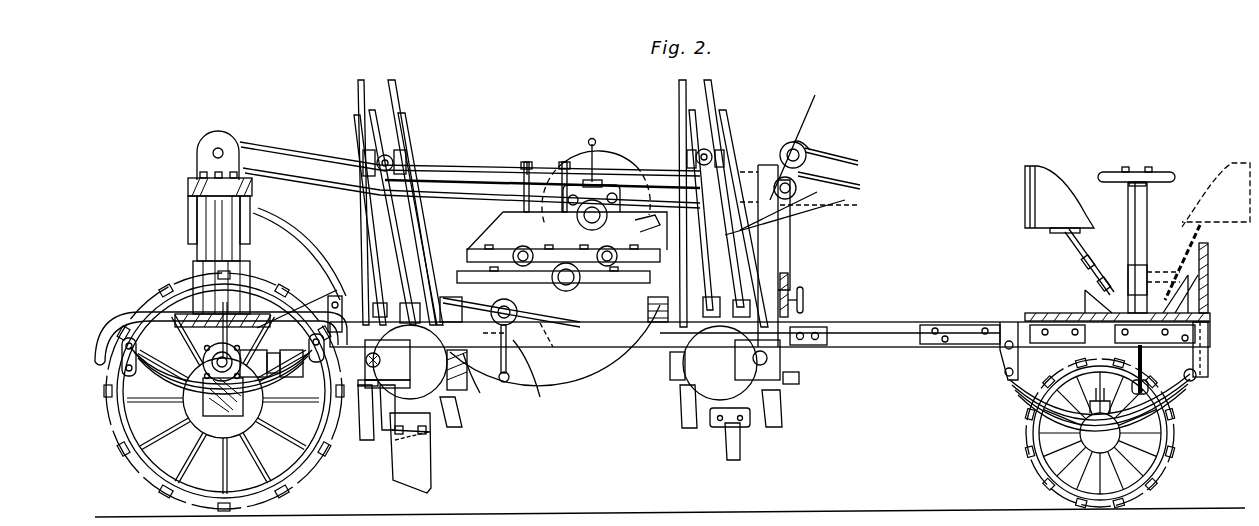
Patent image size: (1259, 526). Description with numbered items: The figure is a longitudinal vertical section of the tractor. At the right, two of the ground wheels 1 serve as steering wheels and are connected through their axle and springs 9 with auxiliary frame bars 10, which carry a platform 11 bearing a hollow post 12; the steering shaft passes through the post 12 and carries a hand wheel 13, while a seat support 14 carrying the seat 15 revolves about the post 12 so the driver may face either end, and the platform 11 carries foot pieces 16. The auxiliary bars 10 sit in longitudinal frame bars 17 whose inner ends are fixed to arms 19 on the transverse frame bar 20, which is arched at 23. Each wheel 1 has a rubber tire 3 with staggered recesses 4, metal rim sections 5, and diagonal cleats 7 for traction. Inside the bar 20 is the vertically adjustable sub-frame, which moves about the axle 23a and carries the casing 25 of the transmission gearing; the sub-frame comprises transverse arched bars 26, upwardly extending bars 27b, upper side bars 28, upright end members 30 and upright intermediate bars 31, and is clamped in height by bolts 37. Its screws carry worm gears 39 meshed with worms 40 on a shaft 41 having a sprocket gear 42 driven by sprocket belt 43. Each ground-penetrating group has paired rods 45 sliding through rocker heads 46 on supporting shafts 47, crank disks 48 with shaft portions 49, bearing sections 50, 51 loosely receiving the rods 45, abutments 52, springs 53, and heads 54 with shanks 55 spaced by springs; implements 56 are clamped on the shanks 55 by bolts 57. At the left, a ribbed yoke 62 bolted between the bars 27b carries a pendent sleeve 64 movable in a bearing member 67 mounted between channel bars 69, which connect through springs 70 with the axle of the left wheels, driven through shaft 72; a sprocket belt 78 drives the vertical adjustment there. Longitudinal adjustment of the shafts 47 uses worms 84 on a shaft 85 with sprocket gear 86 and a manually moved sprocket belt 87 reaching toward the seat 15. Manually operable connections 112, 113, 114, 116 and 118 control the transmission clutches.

The ground wheels 1 is at (150, 445).
The rubber tire 3 is at (305, 482).
The staggered recesses 4 is at (1032, 430).
The rim sections 5 is at (240, 488).
The diagonal metallic cleats 7 is at (1172, 455).
The springs 9 is at (1025, 392).
The auxiliary frame bars 10 is at (958, 330).
The platform 11 is at (1052, 318).
The hollow post 12 is at (1148, 225).
The hand wheel 13 is at (1108, 172).
The seat support 14 is at (1082, 255).
The seat 15 is at (1045, 180).
The foot pieces 16 is at (1125, 290).
The longitudinal frame bars 17 is at (890, 330).
The longitudinally disposed arms 19 is at (805, 347).
The transverse frame bar 20 is at (803, 300).
The arch 23 is at (790, 285).
The axle 23a is at (212, 375).
The casing of the transmission gearing 25 is at (558, 185).
The transverse arched bars 26 is at (475, 345).
The rearwardly and upwardly extending longitudinal bars 27b is at (305, 250).
The upper side bars 28 is at (510, 175).
The upright end members 30 is at (790, 225).
The upright intermediate bars 31 is at (447, 224).
The bolt 37 is at (304, 307).
The worm gear 39 is at (765, 172).
The worms 40 is at (801, 214).
The transverse shaft 41 is at (829, 171).
The sprocket gear 42 is at (792, 139).
The sprocket belt 43 is at (630, 180).
The rods 45 is at (400, 112).
The rocker heads 46 is at (375, 160).
The transverse supporting shafts 47 is at (405, 125).
The crank disks 48 is at (722, 430).
The shaft portions 49 is at (367, 415).
The bearing section 50 is at (380, 360).
The bearing section 51 is at (390, 384).
The abutments 52 is at (382, 348).
The springs 53 is at (450, 345).
The heads 54 is at (382, 440).
The shanks 55 is at (372, 440).
The implements 56 is at (392, 394).
The bolts 57 is at (425, 440).
The ribbed yoke 62 is at (188, 186).
The central pendent sleeve 64 is at (205, 225).
The bearing member 67 is at (205, 272).
The longitudinal channel bars 69 is at (125, 318).
The springs 70 is at (170, 372).
The shaft 72 is at (355, 320).
The sprocket belt 78 is at (272, 152).
The worms 84 is at (797, 150).
The transverse shaft 85 is at (792, 142).
The sprocket gear 86 is at (800, 142).
The sprocket belt 87 is at (850, 156).
The manually operable connection 112 is at (532, 160).
The manually operable connection 113 is at (598, 150).
The manually operable connection 114 is at (594, 150).
The manually operable connection 116 is at (621, 195).
The manually operable connection 118 is at (511, 359).